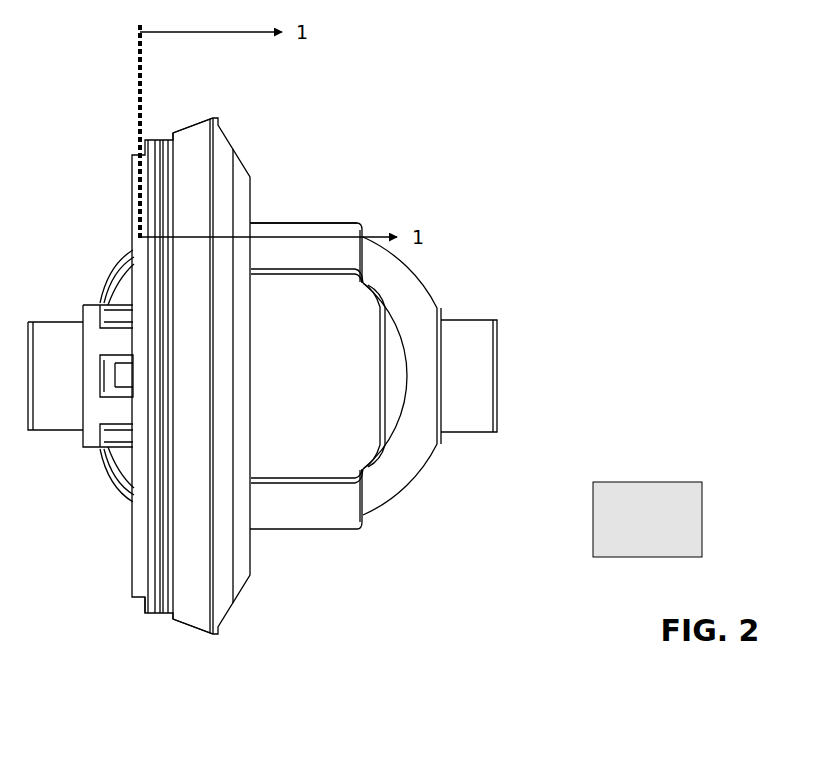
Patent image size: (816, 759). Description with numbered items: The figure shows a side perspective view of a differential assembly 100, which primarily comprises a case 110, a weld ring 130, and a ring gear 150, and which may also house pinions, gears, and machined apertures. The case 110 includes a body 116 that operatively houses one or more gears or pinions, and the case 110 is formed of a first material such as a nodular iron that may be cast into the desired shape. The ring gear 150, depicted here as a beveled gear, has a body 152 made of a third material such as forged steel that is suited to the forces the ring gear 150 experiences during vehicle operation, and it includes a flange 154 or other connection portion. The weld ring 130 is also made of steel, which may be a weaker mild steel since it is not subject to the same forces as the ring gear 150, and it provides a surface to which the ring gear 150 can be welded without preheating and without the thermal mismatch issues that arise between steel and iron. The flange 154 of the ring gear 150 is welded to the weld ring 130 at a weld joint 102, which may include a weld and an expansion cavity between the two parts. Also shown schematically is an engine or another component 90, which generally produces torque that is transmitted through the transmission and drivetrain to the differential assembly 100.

The differential assembly 100 is at (401, 121).
The case 110 is at (443, 286).
The body 116 is at (298, 236).
The weld ring 130 is at (119, 569).
The weld joint 102 is at (151, 608).
The ring gear 150 is at (223, 136).
The body 152 is at (198, 128).
The flange 154 is at (166, 610).
The engine or another component 90 is at (647, 519).